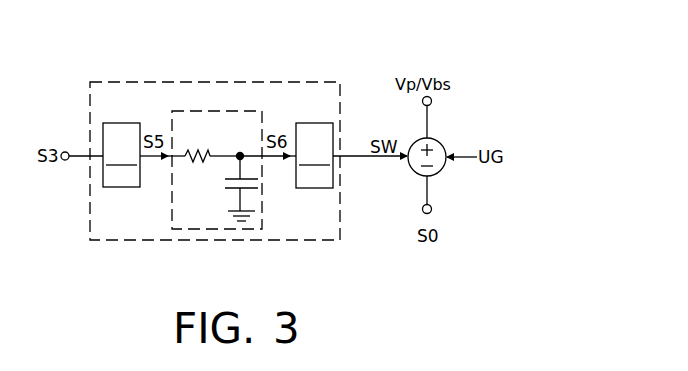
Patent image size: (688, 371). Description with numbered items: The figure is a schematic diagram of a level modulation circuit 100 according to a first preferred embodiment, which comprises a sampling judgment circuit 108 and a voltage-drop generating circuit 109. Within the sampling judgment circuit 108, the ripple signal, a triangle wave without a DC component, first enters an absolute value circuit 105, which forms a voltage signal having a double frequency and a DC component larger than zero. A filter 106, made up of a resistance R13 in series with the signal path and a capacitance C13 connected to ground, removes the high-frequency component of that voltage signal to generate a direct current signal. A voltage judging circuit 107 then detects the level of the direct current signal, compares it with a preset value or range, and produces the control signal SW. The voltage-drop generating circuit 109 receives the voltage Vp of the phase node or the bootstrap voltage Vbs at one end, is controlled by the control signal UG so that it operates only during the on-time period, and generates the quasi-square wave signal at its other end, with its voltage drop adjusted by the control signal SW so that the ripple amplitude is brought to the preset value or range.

The level modulation circuit 100 is at (548, 27).
The absolute value circuit 105 is at (121, 155).
The filter 106 is at (216, 111).
The voltage judging circuit 107 is at (314, 155).
The sampling judgment circuit 108 is at (193, 82).
The voltage-drop generating circuit 109 is at (437, 139).
The resistance R13 is at (201, 143).
The capacitance C13 is at (225, 188).